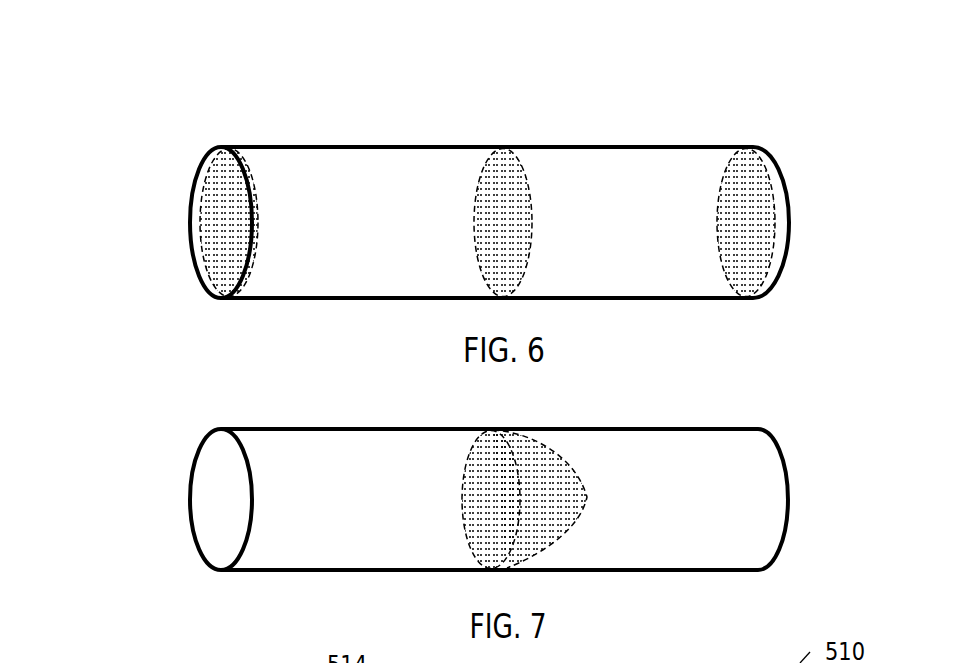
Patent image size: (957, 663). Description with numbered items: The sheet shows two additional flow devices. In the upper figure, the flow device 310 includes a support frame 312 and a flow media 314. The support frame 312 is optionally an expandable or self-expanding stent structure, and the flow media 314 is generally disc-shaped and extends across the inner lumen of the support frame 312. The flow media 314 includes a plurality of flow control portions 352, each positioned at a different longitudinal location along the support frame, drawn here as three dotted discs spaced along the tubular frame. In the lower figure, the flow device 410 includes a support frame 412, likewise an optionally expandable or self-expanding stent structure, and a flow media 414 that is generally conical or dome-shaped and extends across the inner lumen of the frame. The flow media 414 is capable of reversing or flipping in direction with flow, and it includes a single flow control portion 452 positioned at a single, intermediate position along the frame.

In FIG. 6, the flow device 310 is at (832, 123).
In FIG. 6, the support frame 312 is at (633, 147).
In FIG. 6, the flow media 314 is at (210, 242).
In FIG. 6, the flow control portions 352 is at (224, 177).
In FIG. 7, the flow device 410 is at (760, 399).
In FIG. 7, the support frame 412 is at (250, 428).
In FIG. 7, the flow media 414 is at (473, 453).
In FIG. 7, the flow control portion 452 is at (540, 475).